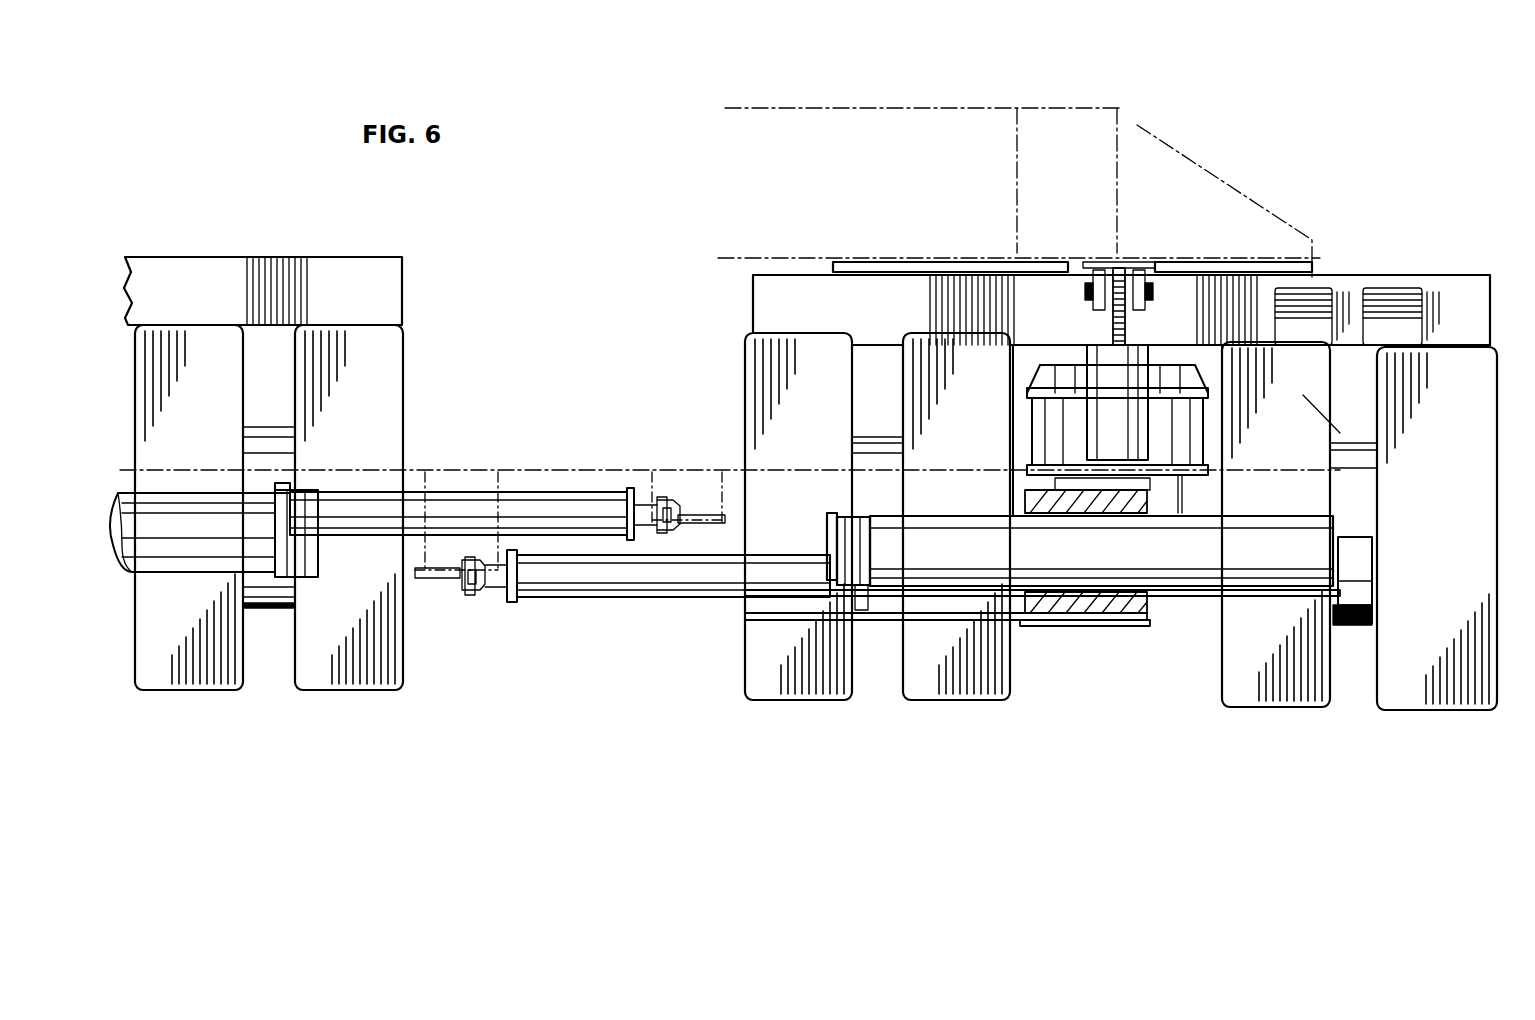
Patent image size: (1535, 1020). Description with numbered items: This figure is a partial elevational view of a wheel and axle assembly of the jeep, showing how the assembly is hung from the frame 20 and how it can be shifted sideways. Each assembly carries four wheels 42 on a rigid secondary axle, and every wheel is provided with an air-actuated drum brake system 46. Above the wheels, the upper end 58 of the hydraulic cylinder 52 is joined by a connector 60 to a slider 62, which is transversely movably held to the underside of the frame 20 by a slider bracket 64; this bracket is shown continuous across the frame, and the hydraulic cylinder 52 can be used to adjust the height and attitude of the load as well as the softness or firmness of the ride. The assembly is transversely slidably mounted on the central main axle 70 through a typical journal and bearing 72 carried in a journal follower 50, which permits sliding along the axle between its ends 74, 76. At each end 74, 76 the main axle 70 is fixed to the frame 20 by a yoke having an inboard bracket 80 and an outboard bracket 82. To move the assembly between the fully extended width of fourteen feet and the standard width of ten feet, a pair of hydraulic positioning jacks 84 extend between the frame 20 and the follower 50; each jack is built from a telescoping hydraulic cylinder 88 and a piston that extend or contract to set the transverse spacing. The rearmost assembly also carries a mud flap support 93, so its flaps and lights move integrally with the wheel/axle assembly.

The frame 20 is at (1033, 99).
The wheel 42 is at (1437, 528).
The drum brake system 46 is at (1200, 373).
The journal follower 50 is at (1103, 627).
The hydraulic cylinder 52 is at (1102, 417).
The upper end 58 is at (1098, 342).
The connector 60 is at (1150, 292).
The slider 62 is at (1132, 268).
The slider bracket 64 is at (1313, 270).
The main axle 70 is at (1195, 596).
The journal and bearing 72 is at (1078, 603).
The end of main axle 74 is at (1338, 555).
The end of main axle 76 is at (830, 533).
The inboard bracket 80 is at (853, 622).
The outboard bracket 82 is at (1348, 628).
The hydraulic positioning jack 84 is at (408, 497).
The telescoping hydraulic cylinder 88 is at (657, 598).
The mud flap support 93 is at (1470, 277).